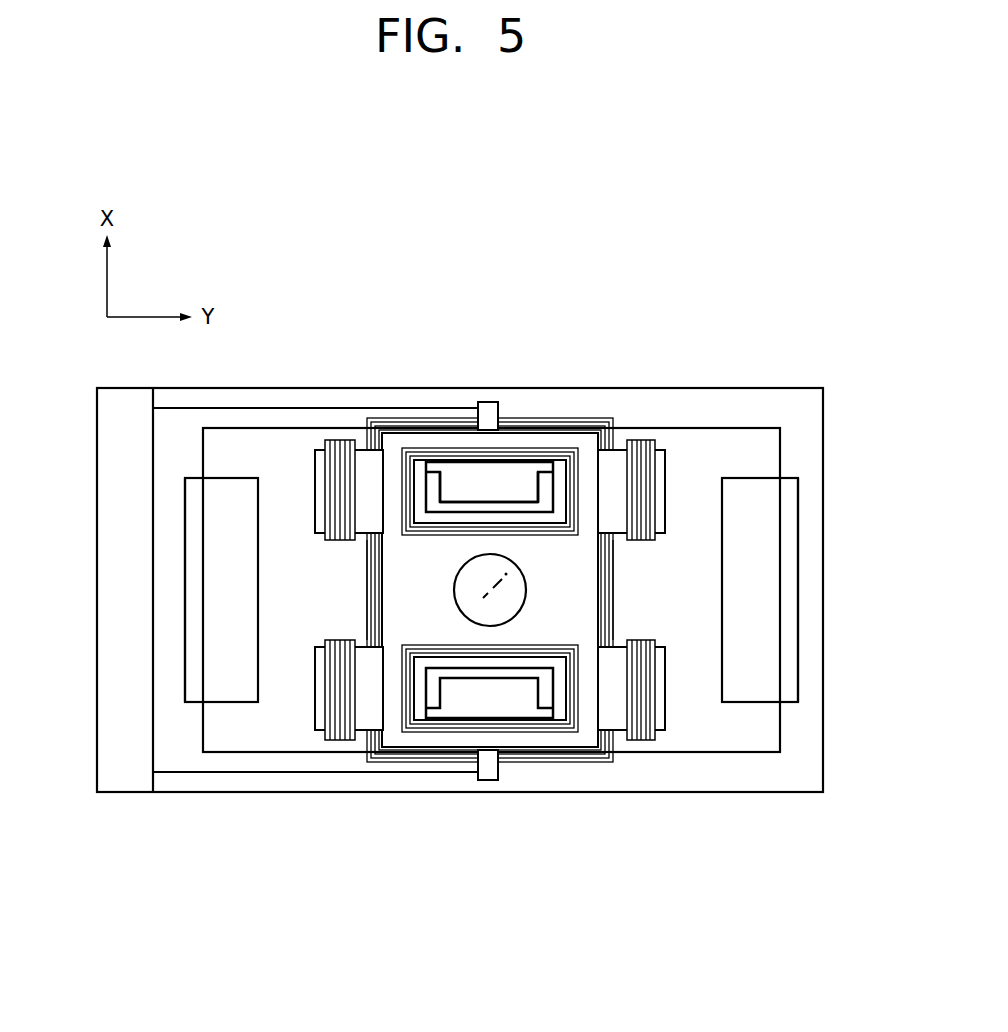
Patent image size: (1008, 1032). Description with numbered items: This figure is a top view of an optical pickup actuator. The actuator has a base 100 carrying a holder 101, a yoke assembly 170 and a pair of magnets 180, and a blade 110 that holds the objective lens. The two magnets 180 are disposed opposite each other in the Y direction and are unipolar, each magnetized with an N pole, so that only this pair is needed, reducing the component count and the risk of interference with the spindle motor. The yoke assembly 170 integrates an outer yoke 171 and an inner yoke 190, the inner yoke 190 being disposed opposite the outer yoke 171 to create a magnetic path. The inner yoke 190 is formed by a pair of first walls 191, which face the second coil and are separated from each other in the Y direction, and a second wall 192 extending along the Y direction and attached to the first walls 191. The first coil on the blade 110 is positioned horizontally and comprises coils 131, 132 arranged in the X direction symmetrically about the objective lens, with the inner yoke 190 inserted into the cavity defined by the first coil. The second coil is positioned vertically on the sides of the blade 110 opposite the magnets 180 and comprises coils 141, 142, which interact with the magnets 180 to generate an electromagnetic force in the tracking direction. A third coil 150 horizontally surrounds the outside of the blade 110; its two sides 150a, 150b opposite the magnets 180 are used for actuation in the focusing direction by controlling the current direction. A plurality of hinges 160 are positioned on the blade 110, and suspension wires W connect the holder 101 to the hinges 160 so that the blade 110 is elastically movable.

The base 100 is at (777, 791).
The holder 101 is at (123, 778).
The blade 110 is at (588, 742).
The coil 131 is at (560, 472).
The coil 132 is at (568, 733).
The coil 141 is at (325, 540).
The coil 142 is at (655, 540).
The third coil 150 is at (491, 647).
The side of the third coil 150a is at (613, 600).
The side of the third coil 150b is at (370, 598).
The hinge 160 is at (498, 425).
The yoke assembly 170 is at (700, 752).
The outer yoke 171 is at (190, 565).
The magnet 180 is at (215, 522).
The inner yoke 190 is at (513, 582).
The first wall 191 is at (433, 480).
The second wall 192 is at (509, 498).
The suspension wire W is at (305, 820).